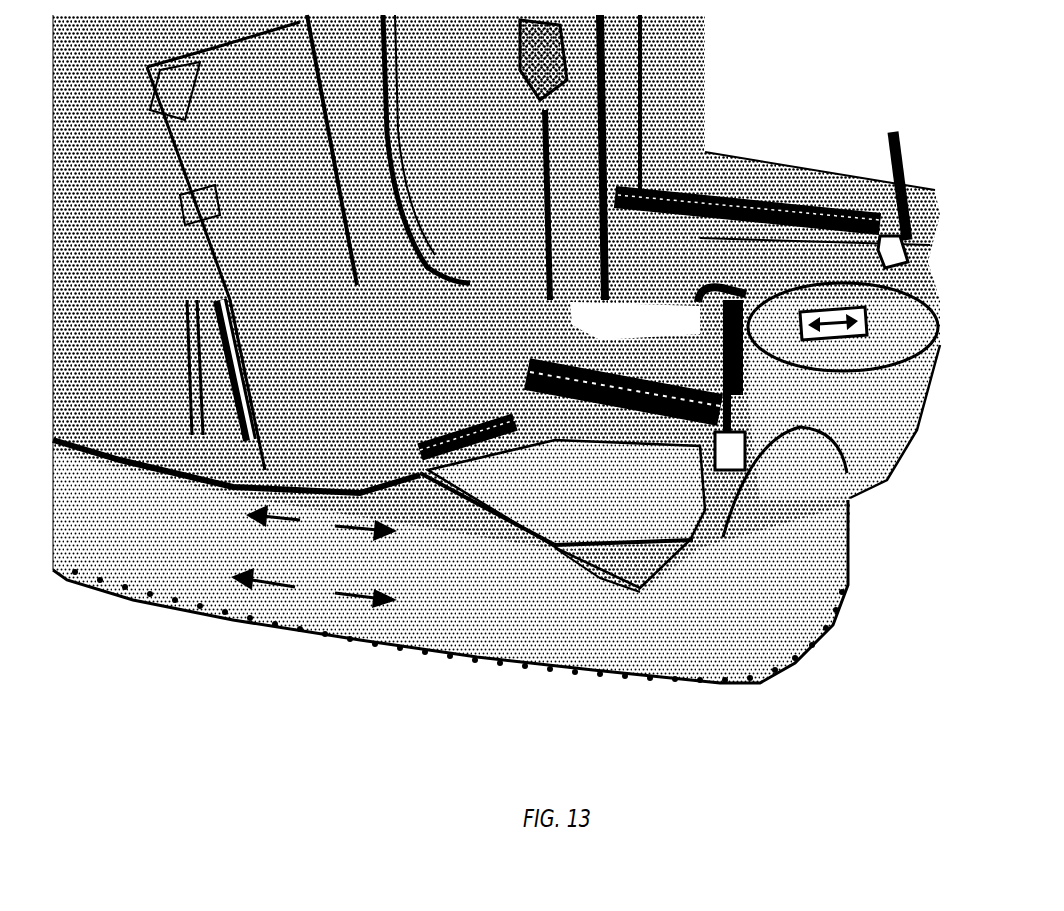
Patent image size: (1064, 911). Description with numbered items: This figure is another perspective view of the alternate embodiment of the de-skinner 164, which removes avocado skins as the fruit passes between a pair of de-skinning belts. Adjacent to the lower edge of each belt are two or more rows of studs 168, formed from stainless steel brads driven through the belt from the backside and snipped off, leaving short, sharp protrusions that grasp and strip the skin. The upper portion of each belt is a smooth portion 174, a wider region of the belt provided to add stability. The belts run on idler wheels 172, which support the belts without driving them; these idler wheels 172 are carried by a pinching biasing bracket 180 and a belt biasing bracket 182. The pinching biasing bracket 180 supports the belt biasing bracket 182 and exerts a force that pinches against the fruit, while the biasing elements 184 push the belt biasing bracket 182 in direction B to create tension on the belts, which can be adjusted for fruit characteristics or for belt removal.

The de-skinner 164 is at (338, 679).
The studs 168 is at (314, 588).
The idler wheels 172 is at (907, 333).
The smooth portion 174 is at (321, 523).
The pinching biasing bracket 180 is at (812, 186).
The belt biasing bracket 182 is at (902, 255).
The biasing elements 184 is at (786, 199).